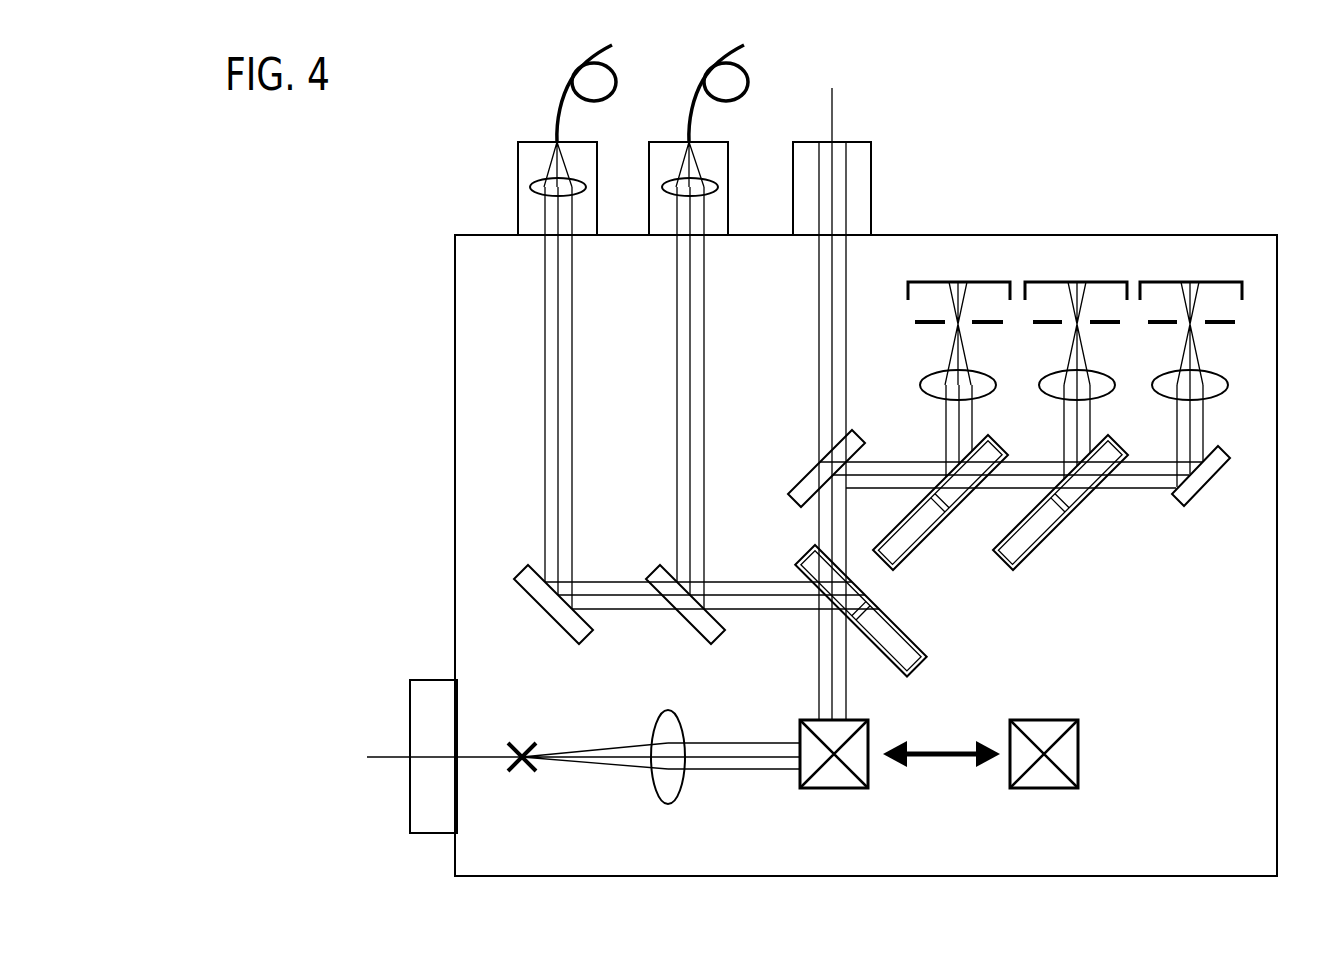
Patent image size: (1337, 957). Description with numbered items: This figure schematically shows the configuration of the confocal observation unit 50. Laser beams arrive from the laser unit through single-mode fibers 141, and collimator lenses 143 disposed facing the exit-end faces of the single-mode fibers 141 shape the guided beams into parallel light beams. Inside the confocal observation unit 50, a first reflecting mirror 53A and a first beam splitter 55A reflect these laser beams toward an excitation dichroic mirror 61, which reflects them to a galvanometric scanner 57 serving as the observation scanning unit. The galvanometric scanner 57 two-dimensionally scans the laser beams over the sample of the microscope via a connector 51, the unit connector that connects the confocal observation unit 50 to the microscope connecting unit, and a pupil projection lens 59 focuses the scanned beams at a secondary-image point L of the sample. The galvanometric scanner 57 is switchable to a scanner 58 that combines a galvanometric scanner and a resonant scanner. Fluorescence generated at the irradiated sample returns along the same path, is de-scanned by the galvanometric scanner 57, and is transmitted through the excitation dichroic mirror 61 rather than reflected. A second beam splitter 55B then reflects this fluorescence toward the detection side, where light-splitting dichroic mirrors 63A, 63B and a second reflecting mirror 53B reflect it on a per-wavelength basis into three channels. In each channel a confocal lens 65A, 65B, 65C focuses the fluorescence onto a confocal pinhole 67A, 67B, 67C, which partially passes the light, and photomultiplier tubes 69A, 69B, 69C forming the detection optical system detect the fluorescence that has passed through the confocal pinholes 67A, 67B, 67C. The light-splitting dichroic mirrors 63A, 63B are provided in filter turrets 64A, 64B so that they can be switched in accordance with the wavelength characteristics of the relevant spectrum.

The confocal observation unit 50 is at (345, 240).
The connector 51 is at (410, 720).
The secondary-image point L is at (520, 752).
The first reflecting mirror 53A is at (520, 568).
The second reflecting mirror 53B is at (1210, 480).
The first beam splitter 55A is at (652, 568).
The second beam splitter 55B is at (803, 480).
The galvanometric scanner 57 is at (872, 776).
The scanner 58 is at (1078, 750).
The pupil projection lens 59 is at (648, 782).
The excitation dichroic mirror 61 is at (925, 668).
The light-splitting dichroic mirror 63A is at (940, 520).
The light-splitting dichroic mirror 63B is at (1076, 514).
The filter turret 64A is at (923, 552).
The filter turret 64B is at (1085, 500).
The confocal lens 65A is at (922, 386).
The confocal lens 65B is at (1047, 398).
The confocal lens 65C is at (1233, 370).
The confocal pinhole 67A is at (913, 323).
The confocal pinhole 67B is at (1033, 323).
The confocal pinhole 67C is at (1228, 318).
The photomultiplier tube 69A is at (935, 282).
The photomultiplier tube 69B is at (1055, 282).
The photomultiplier tube 69C is at (1167, 282).
The single-mode fiber 141 is at (612, 46).
The collimator lens 143 is at (530, 187).